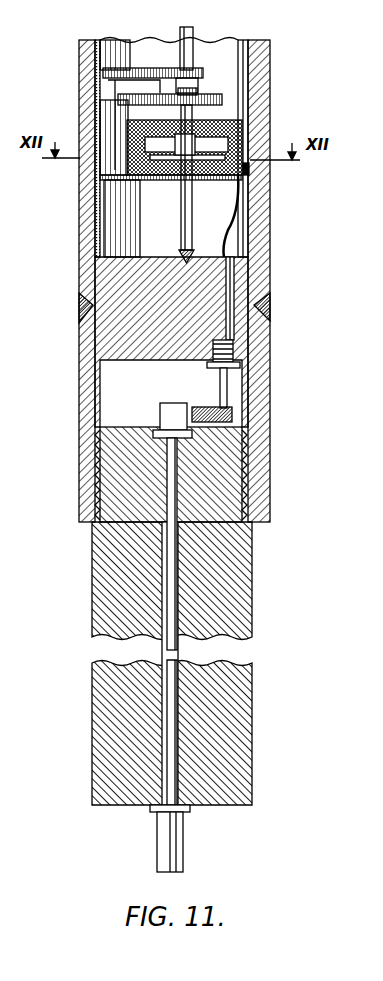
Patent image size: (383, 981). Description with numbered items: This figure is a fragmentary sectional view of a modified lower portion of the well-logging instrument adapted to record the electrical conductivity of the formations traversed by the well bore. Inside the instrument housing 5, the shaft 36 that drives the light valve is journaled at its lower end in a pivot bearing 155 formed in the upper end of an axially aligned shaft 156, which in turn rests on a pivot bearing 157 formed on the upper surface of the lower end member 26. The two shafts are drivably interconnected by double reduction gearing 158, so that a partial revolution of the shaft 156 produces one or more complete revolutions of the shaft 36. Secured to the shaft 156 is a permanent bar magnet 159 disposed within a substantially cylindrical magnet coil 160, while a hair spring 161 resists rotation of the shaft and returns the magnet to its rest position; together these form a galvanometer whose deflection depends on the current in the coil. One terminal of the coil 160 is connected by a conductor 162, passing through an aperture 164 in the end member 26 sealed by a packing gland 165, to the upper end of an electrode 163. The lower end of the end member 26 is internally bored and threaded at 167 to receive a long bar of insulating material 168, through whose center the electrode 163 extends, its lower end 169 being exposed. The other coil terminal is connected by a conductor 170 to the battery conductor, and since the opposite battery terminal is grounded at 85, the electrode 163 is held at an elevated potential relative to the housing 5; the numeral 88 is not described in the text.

The instrument housing 5 is at (88, 84).
The lower end member 26 is at (80, 344).
The shaft 36 is at (190, 40).
The ground connection of battery 85 is at (380, 540).
The adjacent element 88 is at (382, 389).
The pivot bearing 155 is at (193, 88).
The shaft 156 is at (191, 220).
The pivot bearing 157 is at (194, 256).
The double reduction gearing 158 is at (150, 68).
The permanent bar magnet 159 is at (250, 130).
The magnet coil 160 is at (252, 170).
The hair spring 161 is at (167, 160).
The conductor 162 is at (245, 246).
The electrode 163 is at (172, 578).
The aperture 164 is at (232, 282).
The packing gland 165 is at (240, 345).
The internally bored and threaded portion 167 is at (255, 500).
The bar of insulating material 168 is at (230, 620).
The lower end of electrode 169 is at (170, 841).
The conductor 170 is at (262, 73).